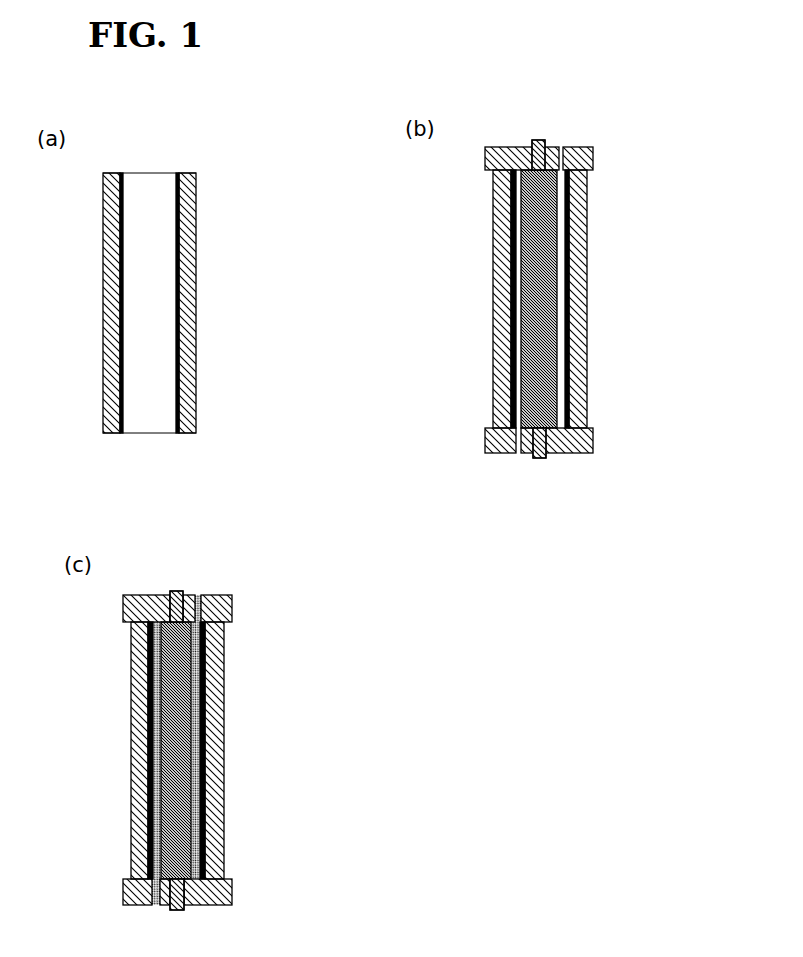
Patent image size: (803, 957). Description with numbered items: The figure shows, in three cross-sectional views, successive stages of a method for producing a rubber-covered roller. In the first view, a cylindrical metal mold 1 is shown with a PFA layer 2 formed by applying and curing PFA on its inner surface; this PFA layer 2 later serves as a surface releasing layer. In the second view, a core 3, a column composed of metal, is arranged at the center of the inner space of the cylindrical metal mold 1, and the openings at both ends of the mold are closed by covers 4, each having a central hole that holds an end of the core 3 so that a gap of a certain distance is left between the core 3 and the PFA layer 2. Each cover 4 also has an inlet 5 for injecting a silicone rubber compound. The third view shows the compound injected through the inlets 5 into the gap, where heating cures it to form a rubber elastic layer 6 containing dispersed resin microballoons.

The cylindrical metal mold 1 is at (190, 253).
The PFA layer 2 is at (123, 392).
The core 3 is at (543, 260).
The cover 4 is at (585, 162).
The inlet 5 is at (559, 150).
The rubber elastic layer 6 is at (202, 745).